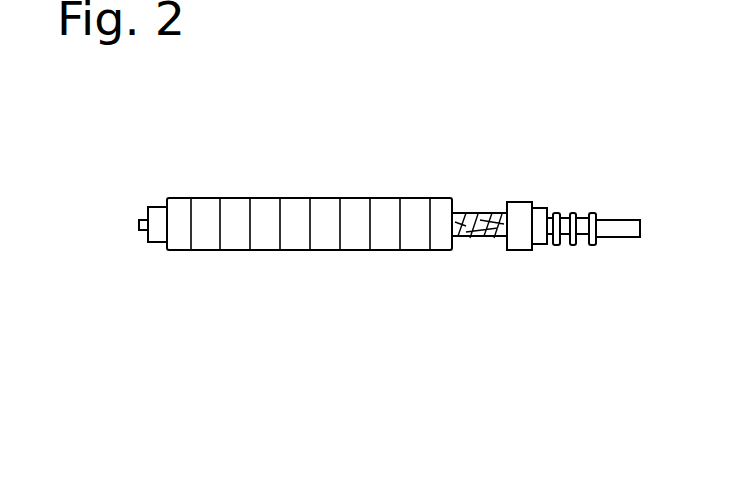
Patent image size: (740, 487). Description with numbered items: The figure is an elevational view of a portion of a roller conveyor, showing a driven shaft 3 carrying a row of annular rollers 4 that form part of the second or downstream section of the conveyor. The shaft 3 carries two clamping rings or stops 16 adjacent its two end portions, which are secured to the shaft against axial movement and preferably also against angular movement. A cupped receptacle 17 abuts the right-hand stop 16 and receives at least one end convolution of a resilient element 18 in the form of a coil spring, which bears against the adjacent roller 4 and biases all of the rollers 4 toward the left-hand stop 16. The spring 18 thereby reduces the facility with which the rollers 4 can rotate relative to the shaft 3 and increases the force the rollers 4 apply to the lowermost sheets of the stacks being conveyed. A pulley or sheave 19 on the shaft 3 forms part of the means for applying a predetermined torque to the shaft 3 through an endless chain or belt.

The driven shaft 3 is at (467, 236).
The annular rollers 4 is at (327, 240).
The clamping rings or stops 16 is at (156, 233).
The cupped receptacle 17 is at (518, 250).
The resilient element 18 is at (458, 218).
The pulley or sheave 19 is at (573, 220).